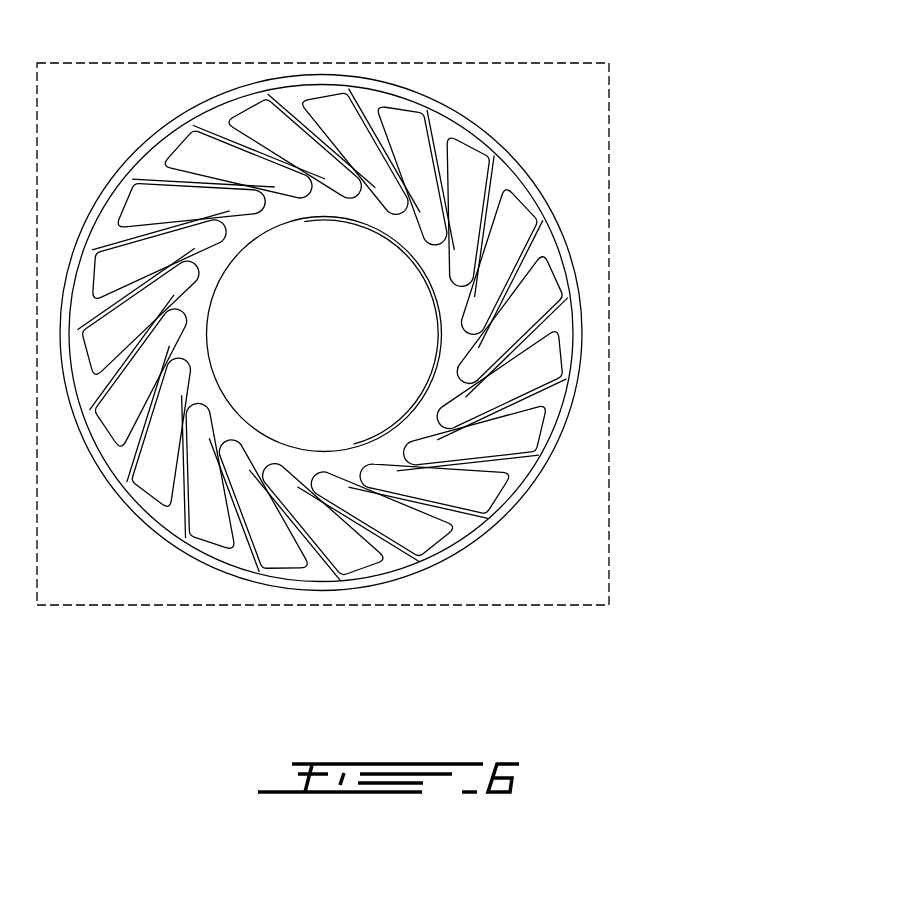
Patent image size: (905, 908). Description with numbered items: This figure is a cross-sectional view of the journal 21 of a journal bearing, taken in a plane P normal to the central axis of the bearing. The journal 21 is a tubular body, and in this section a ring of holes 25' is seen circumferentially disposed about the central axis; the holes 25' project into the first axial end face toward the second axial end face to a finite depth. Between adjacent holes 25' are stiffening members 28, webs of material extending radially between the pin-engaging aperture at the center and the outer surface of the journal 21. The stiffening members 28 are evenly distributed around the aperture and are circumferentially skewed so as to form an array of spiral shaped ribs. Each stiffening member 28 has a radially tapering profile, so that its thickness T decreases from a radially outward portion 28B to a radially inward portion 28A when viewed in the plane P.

The plane P is at (610, 63).
The journal 21 is at (433, 382).
The thickness T is at (533, 257).
The stiffening members 28 is at (385, 382).
The radially inward portion 28A is at (415, 475).
The radially outward portion 28B is at (525, 465).
The holes 25' is at (283, 559).